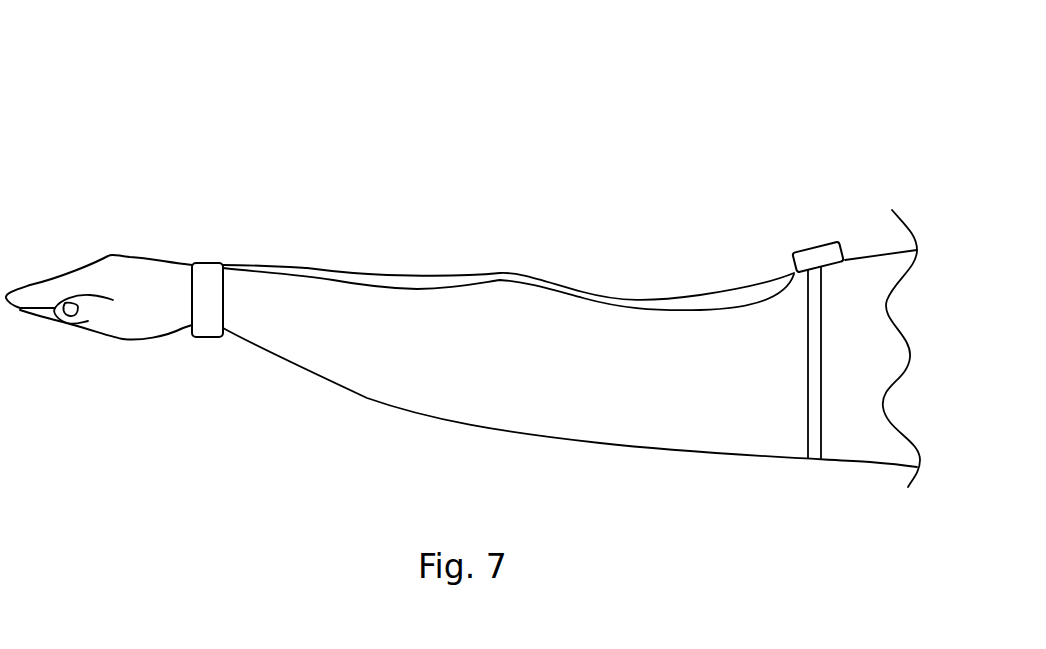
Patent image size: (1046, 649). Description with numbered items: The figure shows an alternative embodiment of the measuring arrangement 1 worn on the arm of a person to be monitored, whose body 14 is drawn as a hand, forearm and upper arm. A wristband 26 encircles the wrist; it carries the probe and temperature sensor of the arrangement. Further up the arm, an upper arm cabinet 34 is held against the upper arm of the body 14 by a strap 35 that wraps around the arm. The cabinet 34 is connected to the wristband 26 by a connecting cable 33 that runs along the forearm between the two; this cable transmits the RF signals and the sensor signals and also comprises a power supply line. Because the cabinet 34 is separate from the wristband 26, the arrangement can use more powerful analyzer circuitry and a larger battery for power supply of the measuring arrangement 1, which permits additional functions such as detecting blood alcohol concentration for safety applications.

The measuring arrangement 1 is at (553, 158).
The body 14 is at (377, 358).
The wristband 26 is at (207, 277).
The connecting cable 33 is at (385, 275).
The upper arm cabinet 34 is at (807, 260).
The strap 35 is at (812, 412).